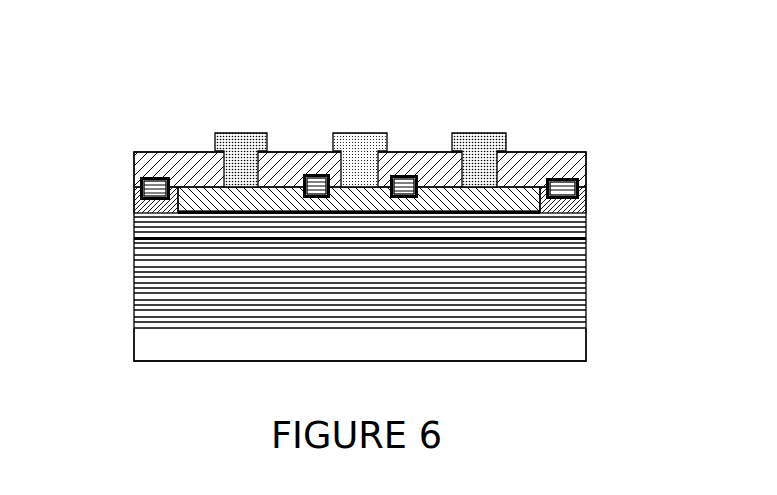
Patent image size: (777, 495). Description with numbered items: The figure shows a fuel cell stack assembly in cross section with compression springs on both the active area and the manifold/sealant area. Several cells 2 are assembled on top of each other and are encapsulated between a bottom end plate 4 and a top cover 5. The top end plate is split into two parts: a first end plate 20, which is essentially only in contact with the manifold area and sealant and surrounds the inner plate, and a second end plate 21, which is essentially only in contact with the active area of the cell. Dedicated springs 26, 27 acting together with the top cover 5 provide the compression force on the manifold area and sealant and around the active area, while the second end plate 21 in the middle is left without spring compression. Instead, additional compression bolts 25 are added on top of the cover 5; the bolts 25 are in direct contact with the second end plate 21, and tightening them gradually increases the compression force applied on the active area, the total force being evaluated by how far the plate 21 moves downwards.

The cells 2 is at (134, 290).
The bottom end plate 4 is at (148, 342).
The cover 5 is at (533, 168).
The first end plate 20 is at (140, 205).
The second end plate 21 is at (200, 198).
The compression bolts 25 is at (241, 140).
The springs 26 is at (140, 186).
The springs 27 is at (318, 176).